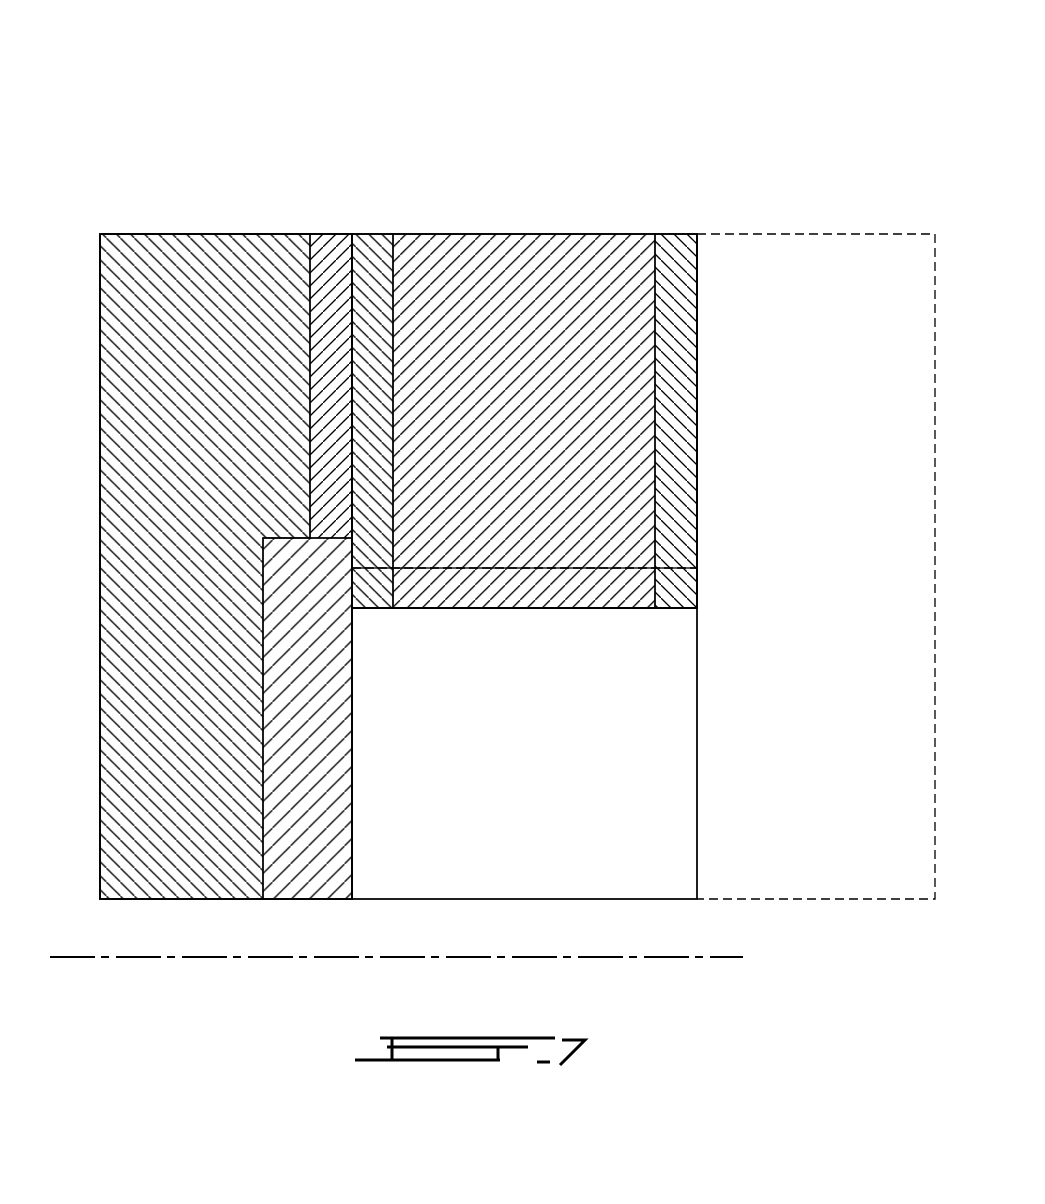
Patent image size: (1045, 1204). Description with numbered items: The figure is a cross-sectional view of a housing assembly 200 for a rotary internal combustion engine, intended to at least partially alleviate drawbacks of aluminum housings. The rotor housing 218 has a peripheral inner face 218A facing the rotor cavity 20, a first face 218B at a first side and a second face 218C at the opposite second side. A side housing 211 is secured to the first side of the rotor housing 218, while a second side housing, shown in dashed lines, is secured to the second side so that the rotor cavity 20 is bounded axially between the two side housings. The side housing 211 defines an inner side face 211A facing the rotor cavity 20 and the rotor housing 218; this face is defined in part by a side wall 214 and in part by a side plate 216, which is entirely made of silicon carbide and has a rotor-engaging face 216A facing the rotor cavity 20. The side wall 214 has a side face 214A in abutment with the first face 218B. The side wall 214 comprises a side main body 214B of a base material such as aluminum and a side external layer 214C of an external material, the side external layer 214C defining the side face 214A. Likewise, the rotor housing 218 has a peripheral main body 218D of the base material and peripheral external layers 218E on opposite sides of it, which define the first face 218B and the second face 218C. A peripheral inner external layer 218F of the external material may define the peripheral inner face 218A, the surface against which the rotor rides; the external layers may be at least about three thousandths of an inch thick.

The housing assembly 200 is at (600, 116).
The rotor cavity 20 is at (655, 786).
The side housing 211 is at (142, 457).
The inner side face 211A is at (352, 365).
The side wall 214 is at (142, 697).
The side face 214A is at (186, 566).
The side main body 214B is at (310, 198).
The side external layer 214C is at (352, 198).
The side plate 216 is at (298, 813).
The rotor-engaging face 216A is at (352, 786).
The rotor housing 218 is at (620, 462).
The peripheral inner face 218A is at (540, 608).
The first face 218B is at (352, 418).
The second face 218C is at (697, 350).
The peripheral main body 218D is at (655, 198).
The peripheral external layers 218E is at (393, 198).
The peripheral inner external layer 218F is at (708, 567).